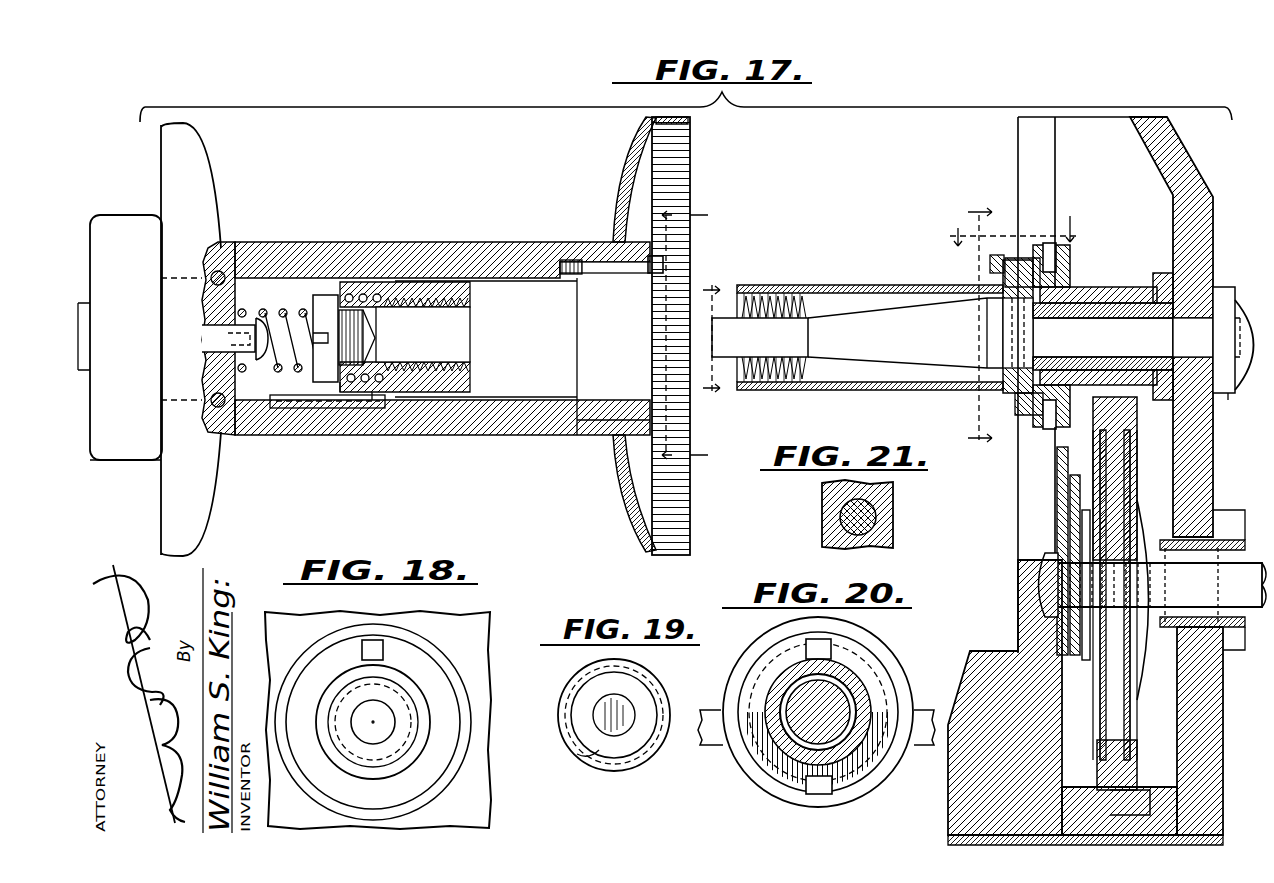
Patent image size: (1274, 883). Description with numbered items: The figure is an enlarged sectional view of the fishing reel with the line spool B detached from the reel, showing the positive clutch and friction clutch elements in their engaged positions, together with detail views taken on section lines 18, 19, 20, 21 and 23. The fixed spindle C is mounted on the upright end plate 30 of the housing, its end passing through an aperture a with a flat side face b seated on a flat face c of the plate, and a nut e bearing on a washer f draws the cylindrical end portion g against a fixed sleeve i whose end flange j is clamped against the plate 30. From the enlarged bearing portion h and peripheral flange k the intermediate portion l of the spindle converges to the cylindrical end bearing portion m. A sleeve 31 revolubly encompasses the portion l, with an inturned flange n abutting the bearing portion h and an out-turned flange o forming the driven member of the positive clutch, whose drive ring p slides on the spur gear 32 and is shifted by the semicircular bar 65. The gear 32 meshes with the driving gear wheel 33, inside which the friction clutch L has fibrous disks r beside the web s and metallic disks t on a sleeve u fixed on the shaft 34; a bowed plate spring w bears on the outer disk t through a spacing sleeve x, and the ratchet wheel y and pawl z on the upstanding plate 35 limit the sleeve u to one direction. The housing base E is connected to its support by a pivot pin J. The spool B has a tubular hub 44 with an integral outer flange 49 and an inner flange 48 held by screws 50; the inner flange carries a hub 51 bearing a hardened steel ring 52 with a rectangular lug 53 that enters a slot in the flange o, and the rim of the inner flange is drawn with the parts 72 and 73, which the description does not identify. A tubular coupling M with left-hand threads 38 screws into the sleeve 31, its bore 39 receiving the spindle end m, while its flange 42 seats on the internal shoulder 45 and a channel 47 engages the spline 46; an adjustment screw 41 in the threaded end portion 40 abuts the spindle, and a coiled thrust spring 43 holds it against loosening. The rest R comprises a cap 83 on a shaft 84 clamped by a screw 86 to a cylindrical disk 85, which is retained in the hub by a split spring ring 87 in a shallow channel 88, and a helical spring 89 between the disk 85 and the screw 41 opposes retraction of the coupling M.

In FIG. 17, the rest R is at (126, 211).
In FIG. 17, the line receiving spool B is at (144, 147).
In FIG. 17, the outer end flange 49 is at (161, 168).
In FIG. 17, the cap 83 is at (128, 458).
In FIG. 17, the cylindrical disk 85 is at (204, 306).
In FIG. 17, the shaft 84 is at (212, 338).
In FIG. 17, the split spring ring 87 is at (221, 272).
In FIG. 17, the shallow channel 88 is at (222, 407).
In FIG. 17, the screw 86 is at (258, 318).
In FIG. 17, the helical spring 89 is at (290, 312).
In FIG. 17, the adjustment screw 41 is at (326, 382).
In FIG. 17, the spline 46 is at (294, 409).
In FIG. 17, the coiled thrust spring 43 is at (345, 305).
In FIG. 17, the flange 42 is at (380, 285).
In FIG. 17, the internally threaded end portion 40 is at (368, 345).
In FIG. 17, the axial bore 39 is at (455, 345).
In FIG. 18, the axial bore 39 is at (378, 732).
In FIG. 17, the tubular coupling M is at (480, 331).
In FIG. 18, the tubular coupling M is at (368, 748).
In FIG. 17, the channel 47 is at (366, 392).
In FIG. 17, the internal shoulder 45 is at (395, 395).
In FIG. 17, the external left-hand threads 38 is at (452, 398).
In FIG. 19, the external left-hand threads 38 is at (590, 754).
In FIG. 17, the tubular hub 44 is at (495, 260).
In FIG. 17, the hardened steel ring 52 is at (645, 405).
In FIG. 18, the hardened steel ring 52 is at (418, 662).
In FIG. 17, the screws 50 is at (586, 260).
In FIG. 17, the rectangular lug 53 is at (665, 265).
In FIG. 18, the rectangular lug 53 is at (362, 650).
In FIG. 17, the inner end flange 48 is at (625, 158).
In FIG. 18, the inner end flange 48 is at (488, 616).
In FIG. 17, the hub 51 is at (645, 440).
In FIG. 18, the hub 51 is at (458, 675).
In FIG. 17, the rim 72 is at (690, 158).
In FIG. 17, the rim cap 73 is at (690, 124).
In FIG. 17, the section line 18— 18 is at (707, 337).
In FIG. 17, the sleeve 31 is at (850, 290).
In FIG. 19, the sleeve 31 is at (592, 675).
In FIG. 20, the sleeve 31 is at (860, 702).
In FIG. 17, the cylindrical end bearing portion m is at (762, 320).
In FIG. 19, the cylindrical end bearing portion m is at (602, 724).
In FIG. 17, the spindle C is at (879, 312).
In FIG. 19, the spindle C is at (582, 709).
In FIG. 20, the spindle C is at (842, 708).
In FIG. 17, the intermediate portion l is at (903, 320).
In FIG. 17, the peripheral flange k is at (988, 320).
In FIG. 17, the enlarged bearing portion h is at (990, 343).
In FIG. 17, the out-turned flange o is at (985, 398).
In FIG. 20, the out-turned flange o is at (852, 693).
In FIG. 17, the section line 19— 19 is at (713, 342).
In FIG. 17, the section line 20— 20 is at (980, 324).
In FIG. 17, the section line 23— 23 is at (1015, 233).
In FIG. 17, the inturned flange n is at (1022, 360).
In FIG. 17, the ring p is at (1072, 256).
In FIG. 17, the semicircular bar 65 is at (1042, 244).
In FIG. 20, the semicircular bar 65 is at (738, 666).
In FIG. 17, the spur gear 32 is at (1112, 292).
In FIG. 17, the end flange j is at (1162, 270).
In FIG. 17, the fixed sleeve i is at (1115, 316).
In FIG. 17, the aperture a is at (1168, 327).
In FIG. 21, the aperture a is at (893, 500).
In FIG. 17, the flat side face b is at (1185, 346).
In FIG. 21, the flat side face b is at (893, 520).
In FIG. 17, the flat face c is at (1187, 337).
In FIG. 21, the flat face c is at (893, 540).
In FIG. 17, the upright end plate 30 is at (1215, 440).
In FIG. 21, the upright end plate 30 is at (833, 514).
In FIG. 17, the cylindrical end portion g is at (1215, 335).
In FIG. 21, the cylindrical end portion g is at (840, 519).
In FIG. 17, the nut e is at (1247, 346).
In FIG. 17, the washer f is at (1226, 398).
In FIG. 17, the section line 21— 21 is at (1216, 269).
In FIG. 17, the driving gear wheel 33 is at (1128, 418).
In FIG. 17, the upstanding plate 35 is at (1056, 475).
In FIG. 17, the spring pressed pawl z is at (1070, 500).
In FIG. 17, the ratchet wheel y is at (1082, 533).
In FIG. 17, the bowed plate spring w is at (1149, 600).
In FIG. 17, the revoluble shaft 34 is at (1050, 585).
In FIG. 17, the sleeve u is at (1171, 585).
In FIG. 17, the spacing sleeve x is at (1227, 585).
In FIG. 17, the friction clutch L is at (1148, 481).
In FIG. 17, the base E is at (1218, 808).
In FIG. 17, the pivot pin J is at (1143, 810).
In FIG. 17, the web s is at (1112, 722).
In FIG. 17, the fibrous disks r is at (1132, 728).
In FIG. 17, the metallic disks t is at (1138, 708).